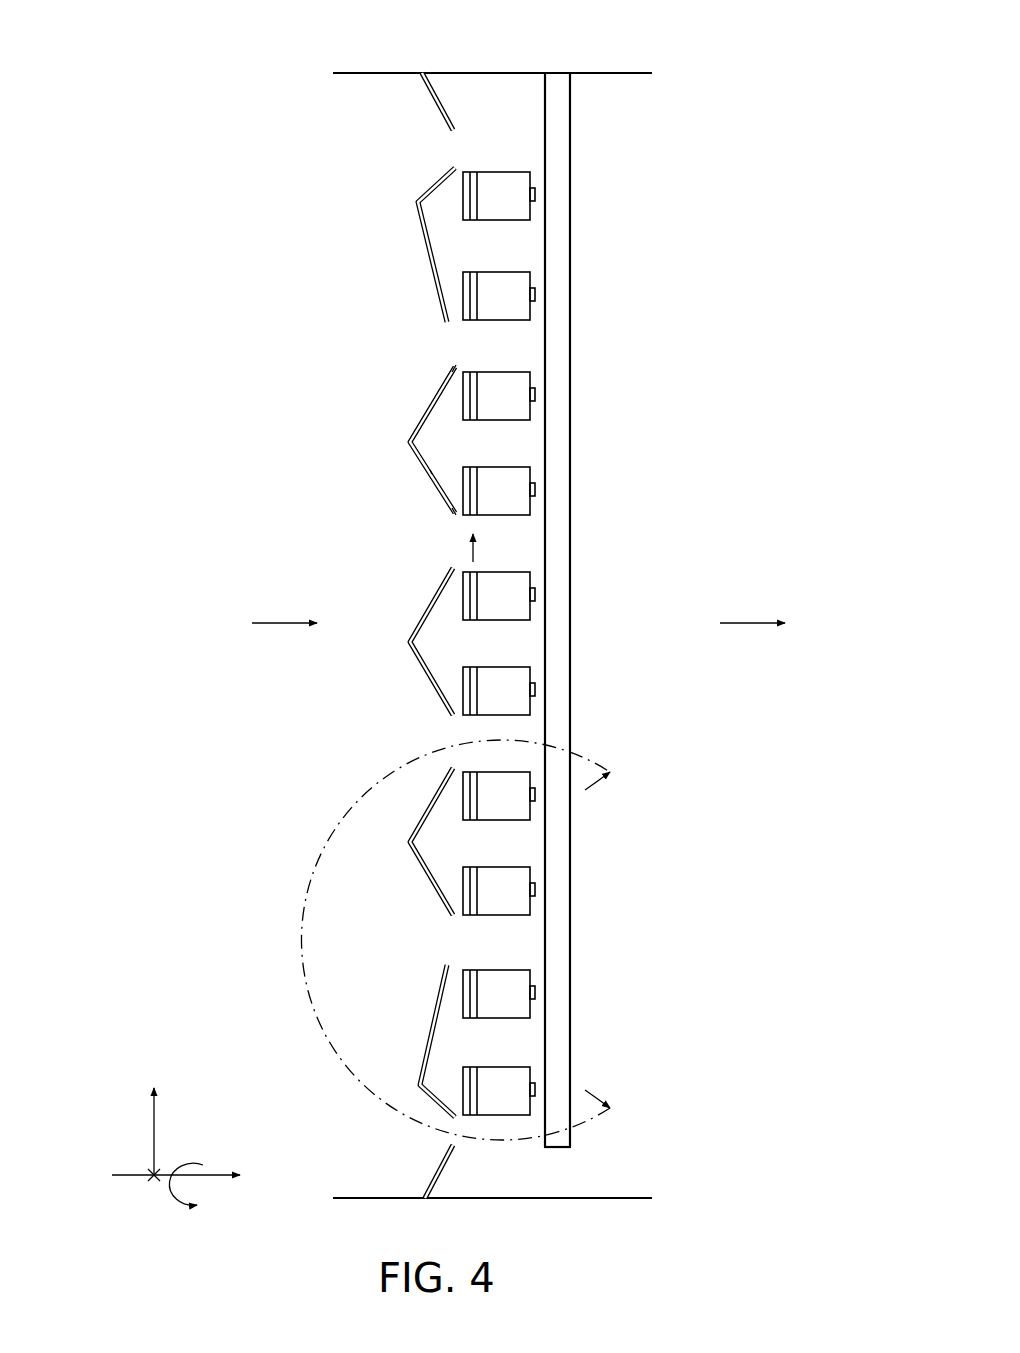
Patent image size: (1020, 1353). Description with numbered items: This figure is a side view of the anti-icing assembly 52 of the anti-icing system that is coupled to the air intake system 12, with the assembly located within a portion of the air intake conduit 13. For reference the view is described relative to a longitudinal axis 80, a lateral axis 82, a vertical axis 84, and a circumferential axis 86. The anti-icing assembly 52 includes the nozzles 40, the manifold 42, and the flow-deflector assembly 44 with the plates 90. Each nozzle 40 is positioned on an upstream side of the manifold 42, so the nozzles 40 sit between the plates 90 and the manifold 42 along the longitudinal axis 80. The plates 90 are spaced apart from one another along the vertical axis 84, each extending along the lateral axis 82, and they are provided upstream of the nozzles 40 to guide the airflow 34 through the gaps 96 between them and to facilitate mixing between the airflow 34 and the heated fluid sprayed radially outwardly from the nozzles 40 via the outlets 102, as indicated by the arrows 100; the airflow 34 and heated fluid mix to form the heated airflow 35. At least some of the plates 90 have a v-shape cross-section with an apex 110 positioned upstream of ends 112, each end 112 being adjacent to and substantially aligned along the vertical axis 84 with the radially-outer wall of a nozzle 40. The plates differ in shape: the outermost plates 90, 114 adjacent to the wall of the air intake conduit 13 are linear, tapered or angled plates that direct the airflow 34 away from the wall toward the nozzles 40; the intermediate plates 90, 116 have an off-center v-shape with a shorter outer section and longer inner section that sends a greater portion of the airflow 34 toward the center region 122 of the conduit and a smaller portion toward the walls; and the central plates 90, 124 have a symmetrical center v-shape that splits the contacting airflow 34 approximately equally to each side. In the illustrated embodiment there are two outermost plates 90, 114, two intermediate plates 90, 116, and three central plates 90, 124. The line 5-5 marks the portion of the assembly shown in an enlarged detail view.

The air intake system 12 is at (535, 1240).
The air intake conduit 13 is at (570, 1198).
The airflow 34 is at (278, 622).
The heated airflow 35 is at (746, 622).
The nozzles 40 is at (522, 186).
The manifold 42 is at (563, 125).
The flow-deflector assembly 44 is at (292, 208).
The anti-icing assembly 52 is at (560, 37).
The longitudinal axis 80 is at (212, 1180).
The lateral axis 82 is at (161, 1176).
The vertical axis 84 is at (154, 1137).
The circumferential axis 86 is at (192, 1150).
The plates 90 is at (379, 635).
The gaps 96 is at (455, 550).
The arrows 100 is at (473, 553).
The outlets 102 is at (477, 572).
The apex 110 is at (410, 442).
The ends 112 is at (457, 365).
The outermost plates 114 is at (437, 103).
The intermediate plates 116 is at (430, 265).
The center region 122 is at (678, 433).
The central plates 124 is at (418, 463).
The line 5- 5 is at (467, 940).